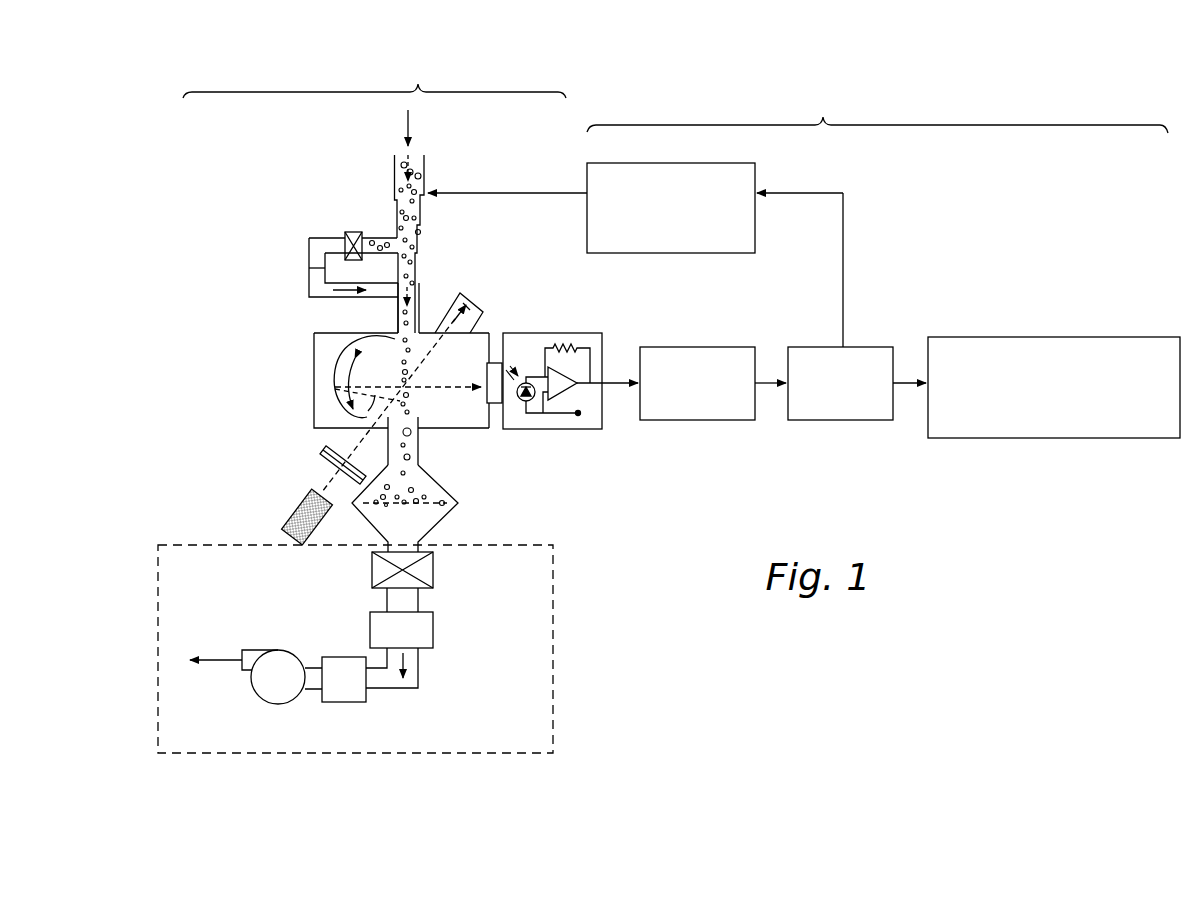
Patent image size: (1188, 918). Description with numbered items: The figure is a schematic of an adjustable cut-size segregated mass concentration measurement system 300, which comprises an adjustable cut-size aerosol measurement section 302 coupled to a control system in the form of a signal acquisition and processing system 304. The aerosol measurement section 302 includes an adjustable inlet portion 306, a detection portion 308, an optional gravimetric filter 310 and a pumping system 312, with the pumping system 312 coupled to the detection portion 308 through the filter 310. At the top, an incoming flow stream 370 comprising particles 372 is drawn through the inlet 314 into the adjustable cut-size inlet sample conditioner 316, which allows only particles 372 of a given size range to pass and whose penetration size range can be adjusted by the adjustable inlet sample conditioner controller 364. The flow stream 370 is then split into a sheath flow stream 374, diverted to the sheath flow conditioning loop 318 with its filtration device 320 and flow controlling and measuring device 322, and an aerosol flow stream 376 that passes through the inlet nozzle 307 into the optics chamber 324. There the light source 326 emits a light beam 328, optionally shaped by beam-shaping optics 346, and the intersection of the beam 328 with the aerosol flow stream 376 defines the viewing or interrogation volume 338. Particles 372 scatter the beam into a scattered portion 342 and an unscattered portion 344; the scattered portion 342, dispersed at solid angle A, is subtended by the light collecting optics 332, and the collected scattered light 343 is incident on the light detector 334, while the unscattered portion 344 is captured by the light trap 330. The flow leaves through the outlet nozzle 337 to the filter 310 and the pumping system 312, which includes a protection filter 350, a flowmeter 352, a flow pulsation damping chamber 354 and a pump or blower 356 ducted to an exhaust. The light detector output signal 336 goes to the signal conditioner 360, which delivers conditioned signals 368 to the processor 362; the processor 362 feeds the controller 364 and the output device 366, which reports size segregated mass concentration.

The adjustable cut-size segregated mass concentration measurement system 300 is at (624, 66).
The adjustable cut-size aerosol measurement section 302 is at (374, 79).
The signal acquisition and processing system 304 is at (877, 113).
The adjustable inlet portion 306 is at (241, 249).
The inlet nozzle 307 is at (398, 346).
The detection portion 308 is at (214, 404).
The filter 310 is at (450, 514).
The pumping system 312 is at (555, 660).
The inlet 314 is at (427, 151).
The adjustable cut-size inlet sample conditioner 316 is at (328, 191).
The sheath flow conditioning loop 318 is at (324, 238).
The filtration device 320 is at (352, 232).
The flow controlling and measuring device 322 is at (309, 277).
The optics chamber 324 is at (416, 386).
The light source 326 is at (293, 517).
The light beam 328 is at (325, 490).
The light trap 330 is at (463, 295).
The light collecting optics 332 is at (315, 373).
The light detector 334 is at (602, 336).
The light detector output signal 336 is at (603, 403).
The outlet nozzle 337 is at (420, 446).
The viewing or interrogation volume 338 is at (503, 333).
The scattered portion 342 is at (315, 418).
The collected scattered light 343 is at (460, 393).
The unscattered portion 344 is at (445, 312).
The beam-shaping optics 346 is at (324, 453).
The protection filter 350 is at (372, 577).
The flowmeter 352 is at (370, 625).
The flow pulsation damping chamber 354 is at (335, 702).
The pump or blower 356 is at (258, 697).
The signal conditioner 360 is at (713, 383).
The processor 362 is at (857, 383).
The adjustable inlet sample conditioner controller 364 is at (635, 255).
The output device 366 is at (1054, 387).
The conditioned signal 368 is at (760, 380).
The incoming flow stream 370 is at (427, 168).
The particles 372 is at (402, 156).
The sheath flow stream 374 is at (340, 298).
The aerosol flow stream 376 is at (423, 262).